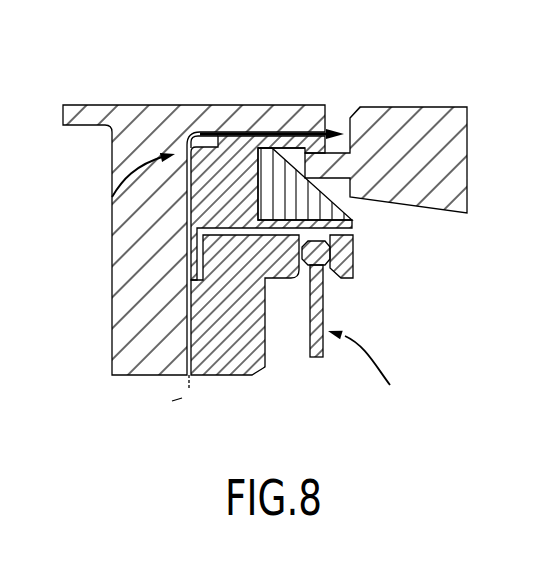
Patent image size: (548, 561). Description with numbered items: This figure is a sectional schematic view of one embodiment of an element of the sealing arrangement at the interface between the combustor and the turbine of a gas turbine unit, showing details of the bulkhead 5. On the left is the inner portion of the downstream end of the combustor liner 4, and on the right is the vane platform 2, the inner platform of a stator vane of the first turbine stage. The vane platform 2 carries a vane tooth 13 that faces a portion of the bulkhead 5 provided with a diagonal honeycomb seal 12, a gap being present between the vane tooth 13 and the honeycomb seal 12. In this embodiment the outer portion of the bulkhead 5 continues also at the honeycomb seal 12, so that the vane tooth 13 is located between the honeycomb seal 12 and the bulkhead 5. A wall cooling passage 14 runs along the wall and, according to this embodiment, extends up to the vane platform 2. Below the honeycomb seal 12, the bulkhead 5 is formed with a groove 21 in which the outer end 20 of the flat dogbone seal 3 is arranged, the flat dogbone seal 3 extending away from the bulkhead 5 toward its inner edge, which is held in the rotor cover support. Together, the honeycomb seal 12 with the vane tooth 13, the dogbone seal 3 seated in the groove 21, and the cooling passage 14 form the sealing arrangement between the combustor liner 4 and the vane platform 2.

The vane platform 2 is at (385, 115).
The flat dogbone seal 3 is at (365, 372).
The combustor liner 4 is at (113, 118).
The bulkhead 5 is at (228, 356).
The diagonal honeycomb seal 12 is at (352, 237).
The vane tooth 13 is at (332, 136).
The wall cooling passage 14 is at (112, 197).
The outer end of the flat dogbone seal 20 is at (343, 279).
The groove of the bulkhead 21 is at (298, 283).